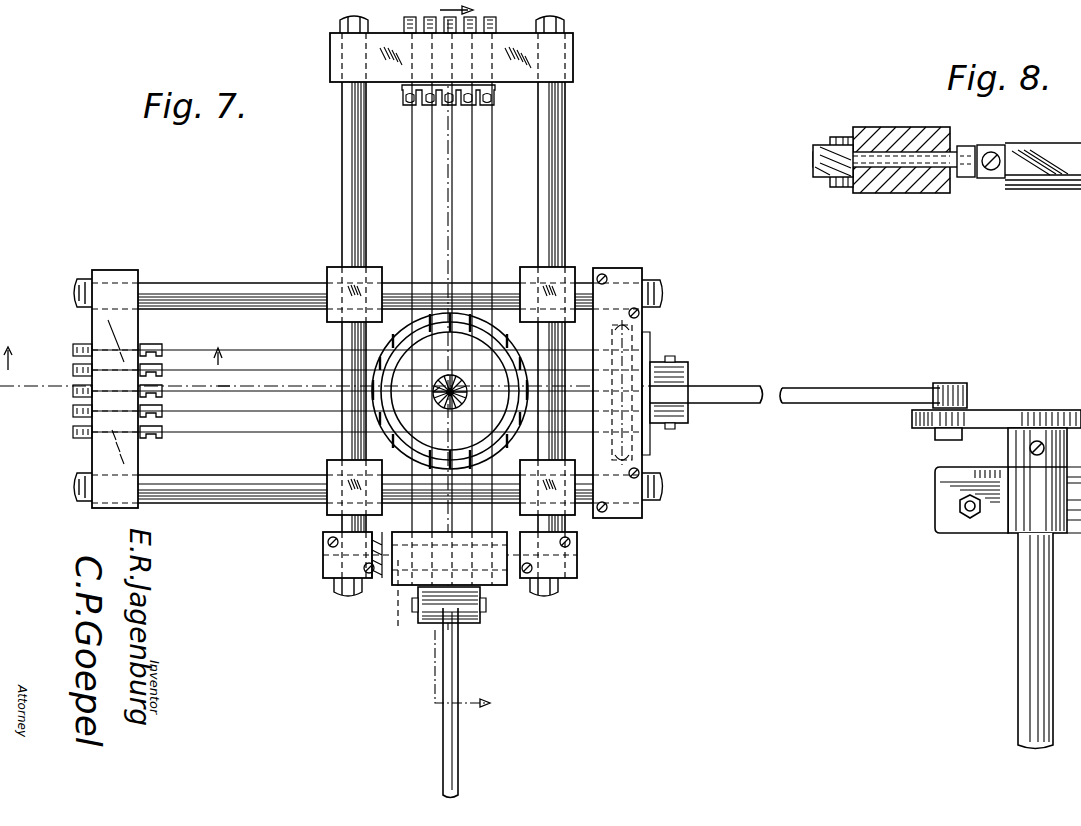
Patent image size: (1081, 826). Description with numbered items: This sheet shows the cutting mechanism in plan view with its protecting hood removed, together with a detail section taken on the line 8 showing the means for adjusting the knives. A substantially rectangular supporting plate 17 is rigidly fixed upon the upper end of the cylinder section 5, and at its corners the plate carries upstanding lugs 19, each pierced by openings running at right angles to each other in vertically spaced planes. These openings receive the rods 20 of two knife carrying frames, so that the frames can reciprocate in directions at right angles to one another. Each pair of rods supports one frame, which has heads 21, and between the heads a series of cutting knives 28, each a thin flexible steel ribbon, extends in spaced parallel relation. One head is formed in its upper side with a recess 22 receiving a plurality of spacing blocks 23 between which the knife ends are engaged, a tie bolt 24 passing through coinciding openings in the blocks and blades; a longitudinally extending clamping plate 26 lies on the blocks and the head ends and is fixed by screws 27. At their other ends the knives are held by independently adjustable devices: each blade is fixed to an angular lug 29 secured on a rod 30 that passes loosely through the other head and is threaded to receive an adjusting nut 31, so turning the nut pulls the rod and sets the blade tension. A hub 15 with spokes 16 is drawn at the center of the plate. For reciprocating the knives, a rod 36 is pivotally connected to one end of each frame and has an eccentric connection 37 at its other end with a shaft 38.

In FIG. 7, the cylinder section 5 is at (380, 434).
In FIG. 7, the section line 8— 8 is at (115, 375).
In FIG. 7, the hub 15 is at (468, 386).
In FIG. 7, the hub spokes 16 is at (433, 386).
In FIG. 7, the supporting plate 17 is at (498, 268).
In FIG. 7, the upstanding lugs 19 is at (330, 270).
In FIG. 7, the rods 20 is at (570, 118).
In FIG. 7, the heads 21 is at (565, 55).
In FIG. 8, the heads 21 is at (912, 193).
In FIG. 7, the recess 22 is at (390, 582).
In FIG. 7, the spacing blocks 23 is at (652, 362).
In FIG. 7, the tie bolt 24 is at (632, 440).
In FIG. 7, the clamping plate 26 is at (632, 515).
In FIG. 7, the screws 27 is at (640, 312).
In FIG. 7, the cutting knives 28 is at (472, 178).
In FIG. 8, the cutting knives 28 is at (1025, 180).
In FIG. 7, the angular lug 29 is at (492, 98).
In FIG. 8, the angular lug 29 is at (965, 148).
In FIG. 8, the rod 30 is at (890, 150).
In FIG. 7, the adjusting nut 31 is at (497, 32).
In FIG. 8, the adjusting nut 31 is at (823, 145).
In FIG. 7, the rod 36 is at (750, 386).
In FIG. 8, the rod 36 is at (873, 395).
In FIG. 8, the eccentric connection 37 is at (968, 408).
In FIG. 8, the shaft 38 is at (1022, 565).